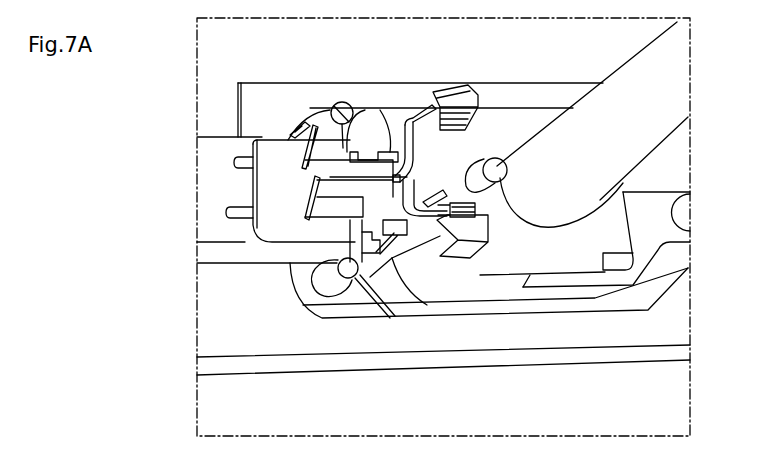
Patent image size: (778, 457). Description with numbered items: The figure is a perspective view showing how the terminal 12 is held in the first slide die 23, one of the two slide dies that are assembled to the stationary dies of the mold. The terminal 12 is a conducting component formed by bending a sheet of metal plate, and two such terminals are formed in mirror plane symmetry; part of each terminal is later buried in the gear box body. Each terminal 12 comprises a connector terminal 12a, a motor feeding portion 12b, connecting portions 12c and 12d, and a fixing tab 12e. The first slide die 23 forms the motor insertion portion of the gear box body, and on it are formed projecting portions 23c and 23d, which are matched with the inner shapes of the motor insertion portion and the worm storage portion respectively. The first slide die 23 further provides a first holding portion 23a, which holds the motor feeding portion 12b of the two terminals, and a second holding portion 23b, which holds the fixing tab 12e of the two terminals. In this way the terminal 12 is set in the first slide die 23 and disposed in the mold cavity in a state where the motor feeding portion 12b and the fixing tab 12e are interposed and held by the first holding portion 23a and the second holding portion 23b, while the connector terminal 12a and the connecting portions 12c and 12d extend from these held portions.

The first slide die 23 is at (216, 98).
The first holding portion 23a is at (474, 112).
The second holding portion 23b is at (398, 270).
The projecting portion 23c is at (595, 295).
The projecting portion 23d is at (628, 72).
The terminal 12 is at (300, 118).
The connector terminal 12a is at (305, 198).
The motor feeding portion 12b is at (444, 202).
The connecting portion 12c is at (347, 152).
The connecting portion 12d is at (413, 186).
The fixing tab 12e is at (381, 150).